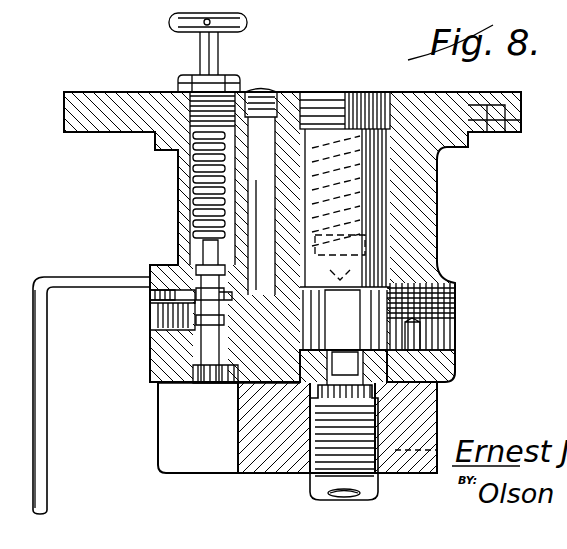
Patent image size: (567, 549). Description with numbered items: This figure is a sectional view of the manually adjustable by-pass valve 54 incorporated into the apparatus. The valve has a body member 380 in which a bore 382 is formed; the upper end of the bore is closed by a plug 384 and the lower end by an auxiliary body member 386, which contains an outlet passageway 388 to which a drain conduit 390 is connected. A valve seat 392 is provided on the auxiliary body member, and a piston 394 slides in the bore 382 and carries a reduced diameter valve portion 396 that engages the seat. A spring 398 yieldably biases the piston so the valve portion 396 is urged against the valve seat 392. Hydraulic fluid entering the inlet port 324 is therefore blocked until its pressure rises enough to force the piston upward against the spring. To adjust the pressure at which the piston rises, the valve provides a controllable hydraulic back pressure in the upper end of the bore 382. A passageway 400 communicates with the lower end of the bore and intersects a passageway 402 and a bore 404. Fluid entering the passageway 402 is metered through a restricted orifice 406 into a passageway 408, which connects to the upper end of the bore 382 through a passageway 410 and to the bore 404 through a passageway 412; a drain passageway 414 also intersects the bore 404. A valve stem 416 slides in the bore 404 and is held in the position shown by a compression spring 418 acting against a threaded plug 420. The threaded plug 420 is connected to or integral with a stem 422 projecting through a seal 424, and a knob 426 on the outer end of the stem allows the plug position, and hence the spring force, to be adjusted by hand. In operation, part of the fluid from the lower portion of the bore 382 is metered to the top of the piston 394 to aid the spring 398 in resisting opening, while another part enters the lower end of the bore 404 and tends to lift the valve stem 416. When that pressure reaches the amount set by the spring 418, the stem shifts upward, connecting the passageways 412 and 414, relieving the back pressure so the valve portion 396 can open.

The body member 380 is at (445, 92).
The spring 398 is at (468, 144).
The piston 394 is at (373, 205).
The manually adjustable by-pass valve 54 is at (450, 209).
The bore 382 is at (380, 262).
The inlet port 324 is at (455, 289).
The reduced diameter valve portion 396 is at (413, 316).
The valve seat 392 is at (455, 352).
The auxiliary body member 386 is at (432, 399).
The plug 384 is at (338, 95).
The passageway 410 is at (285, 92).
The seal 424 is at (237, 75).
The knob 426 is at (247, 25).
The stem 422 is at (200, 50).
The threaded plug 420 is at (180, 160).
The passageway 408 is at (200, 181).
The compression spring 418 is at (200, 198).
The drain passageway 414 is at (173, 267).
The passageway 412 is at (230, 295).
The restricted orifice 406 is at (152, 306).
The valve stem 416 is at (162, 318).
The bore 404 is at (190, 333).
The passageway 402 is at (240, 403).
The passageway 400 is at (268, 431).
The outlet passageway 388 is at (258, 465).
The drain conduit 390 is at (312, 486).